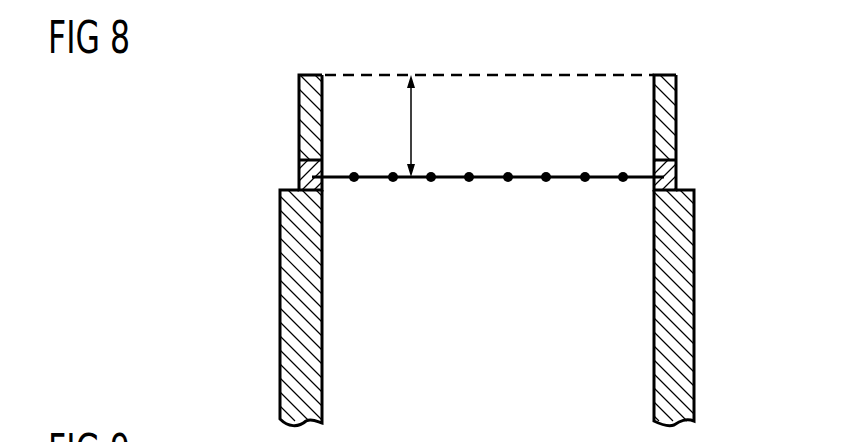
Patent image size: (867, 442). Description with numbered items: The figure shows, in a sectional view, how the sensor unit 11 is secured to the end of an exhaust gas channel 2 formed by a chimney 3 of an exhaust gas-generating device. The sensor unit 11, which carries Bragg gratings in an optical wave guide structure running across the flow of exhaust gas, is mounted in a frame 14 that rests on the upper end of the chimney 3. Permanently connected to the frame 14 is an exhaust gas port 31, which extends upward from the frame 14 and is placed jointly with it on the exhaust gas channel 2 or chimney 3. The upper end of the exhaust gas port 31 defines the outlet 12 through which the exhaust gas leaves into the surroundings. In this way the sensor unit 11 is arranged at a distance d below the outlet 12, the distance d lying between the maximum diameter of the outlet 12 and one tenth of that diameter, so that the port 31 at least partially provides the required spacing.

The exhaust gas channel 2 is at (479, 337).
The chimney 3 is at (672, 283).
The sensor unit 11 is at (494, 197).
The outlet 12 is at (498, 75).
The frame 14 is at (661, 178).
The exhaust gas port 31 is at (666, 126).
The distance d is at (411, 122).